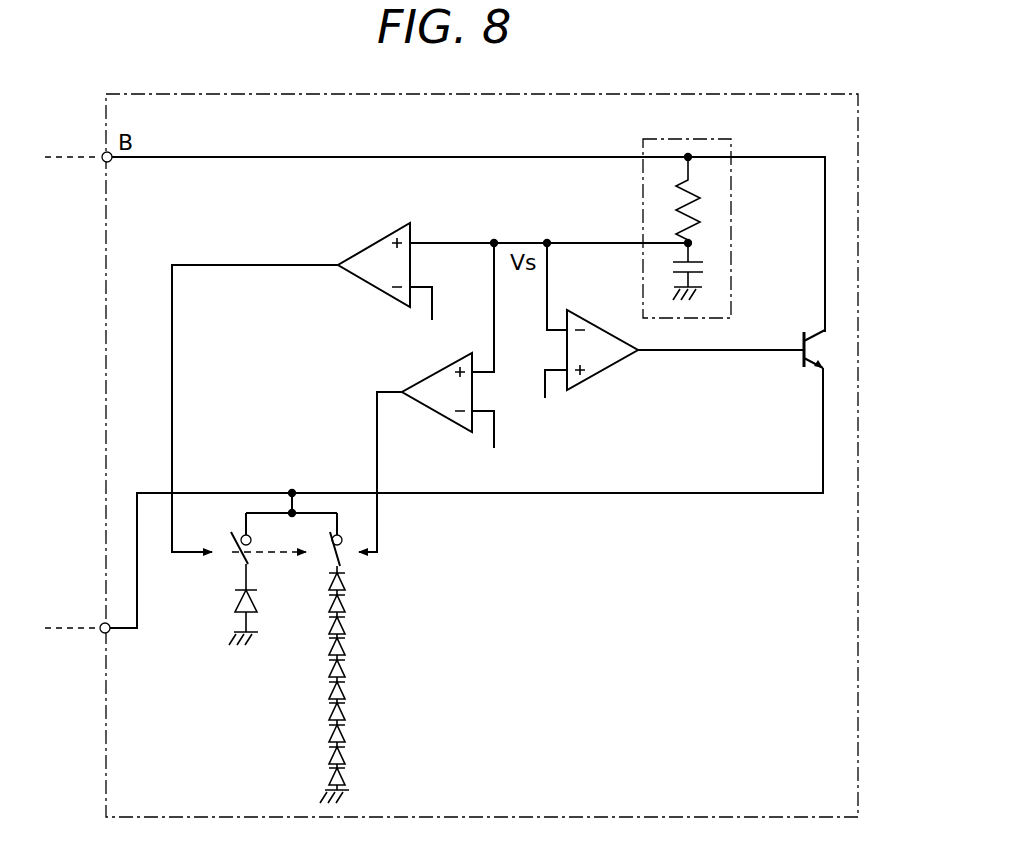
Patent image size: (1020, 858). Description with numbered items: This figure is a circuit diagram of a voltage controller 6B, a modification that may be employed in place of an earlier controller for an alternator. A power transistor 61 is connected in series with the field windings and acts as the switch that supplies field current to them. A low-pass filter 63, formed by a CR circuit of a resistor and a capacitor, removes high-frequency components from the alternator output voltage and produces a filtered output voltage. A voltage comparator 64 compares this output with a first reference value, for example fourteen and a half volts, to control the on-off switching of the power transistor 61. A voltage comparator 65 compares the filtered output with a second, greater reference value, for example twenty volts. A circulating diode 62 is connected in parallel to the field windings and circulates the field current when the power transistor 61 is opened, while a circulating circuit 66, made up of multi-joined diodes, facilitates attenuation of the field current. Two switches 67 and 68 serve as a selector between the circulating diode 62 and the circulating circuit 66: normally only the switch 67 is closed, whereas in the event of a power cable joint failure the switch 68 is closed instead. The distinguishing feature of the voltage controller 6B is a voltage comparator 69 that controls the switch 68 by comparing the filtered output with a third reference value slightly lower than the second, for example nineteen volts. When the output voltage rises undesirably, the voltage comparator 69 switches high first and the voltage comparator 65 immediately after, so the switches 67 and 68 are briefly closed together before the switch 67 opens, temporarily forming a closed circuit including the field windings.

The voltage controller 6B is at (783, 94).
The power transistor 61 is at (805, 335).
The circulating diode 62 is at (234, 603).
The low-pass filter 63 is at (731, 215).
The voltage comparator 64 is at (600, 328).
The voltage comparator 65 is at (380, 239).
The circulating circuit 66 is at (343, 662).
The switch 67 is at (231, 558).
The switch 68 is at (345, 562).
The voltage comparator 69 is at (438, 408).